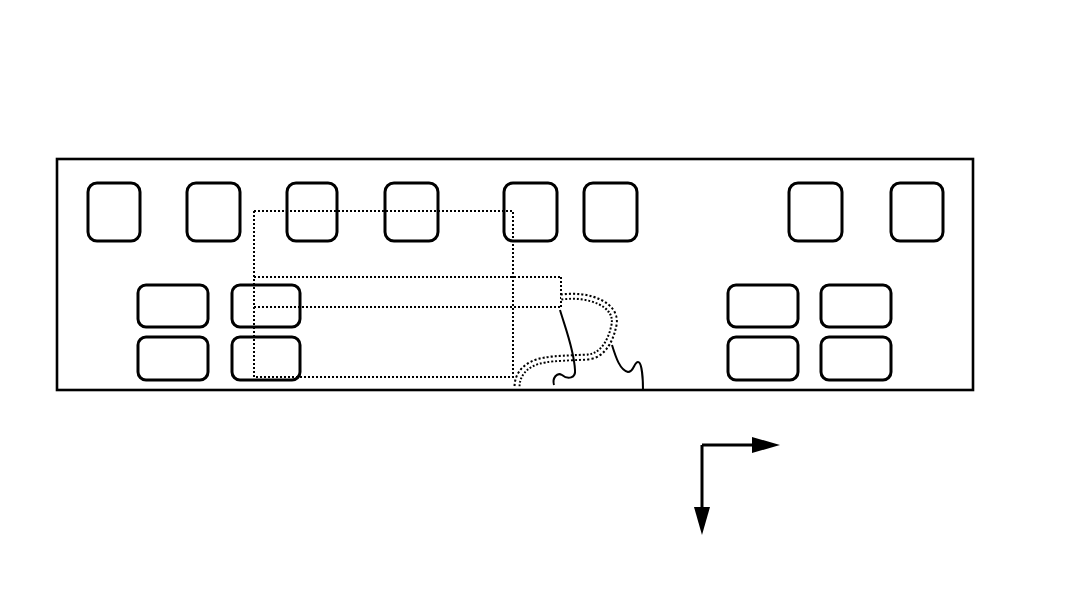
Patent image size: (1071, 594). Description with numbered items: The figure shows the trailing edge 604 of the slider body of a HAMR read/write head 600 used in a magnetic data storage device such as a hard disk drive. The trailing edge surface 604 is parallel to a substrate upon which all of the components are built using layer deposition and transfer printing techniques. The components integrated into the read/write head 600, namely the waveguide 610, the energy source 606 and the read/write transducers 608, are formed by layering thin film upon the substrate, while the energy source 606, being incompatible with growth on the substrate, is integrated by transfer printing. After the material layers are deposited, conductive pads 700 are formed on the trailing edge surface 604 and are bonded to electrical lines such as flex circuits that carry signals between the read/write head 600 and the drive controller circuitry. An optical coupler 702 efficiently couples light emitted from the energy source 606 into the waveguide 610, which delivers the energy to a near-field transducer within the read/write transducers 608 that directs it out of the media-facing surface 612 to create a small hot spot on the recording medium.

The read/write head 600 is at (582, 141).
The trailing edge surface 604 is at (173, 170).
The energy source 606 is at (383, 372).
The read/write transducers 608 is at (508, 409).
The waveguide 610 is at (643, 390).
The media-facing surface 612 is at (262, 375).
The conductive pads 700 is at (398, 182).
The optical coupler 702 is at (554, 385).